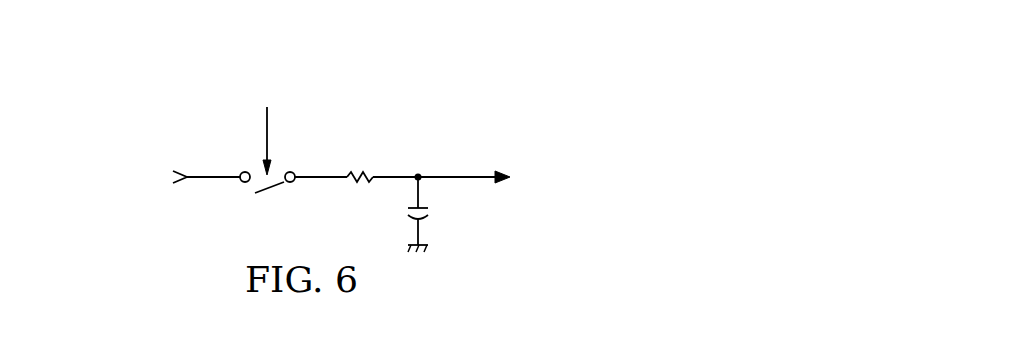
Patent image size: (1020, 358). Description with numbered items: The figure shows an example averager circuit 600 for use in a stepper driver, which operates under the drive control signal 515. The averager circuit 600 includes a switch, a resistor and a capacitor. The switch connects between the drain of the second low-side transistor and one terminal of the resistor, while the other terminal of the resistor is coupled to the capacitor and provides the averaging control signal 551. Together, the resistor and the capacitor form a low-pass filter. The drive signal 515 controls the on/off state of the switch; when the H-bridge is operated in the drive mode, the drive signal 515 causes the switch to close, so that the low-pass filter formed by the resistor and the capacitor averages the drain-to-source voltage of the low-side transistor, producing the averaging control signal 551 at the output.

The averager circuit 600 is at (395, 68).
The DRV control signal 515 is at (265, 135).
The averaging control signal 551 is at (463, 176).